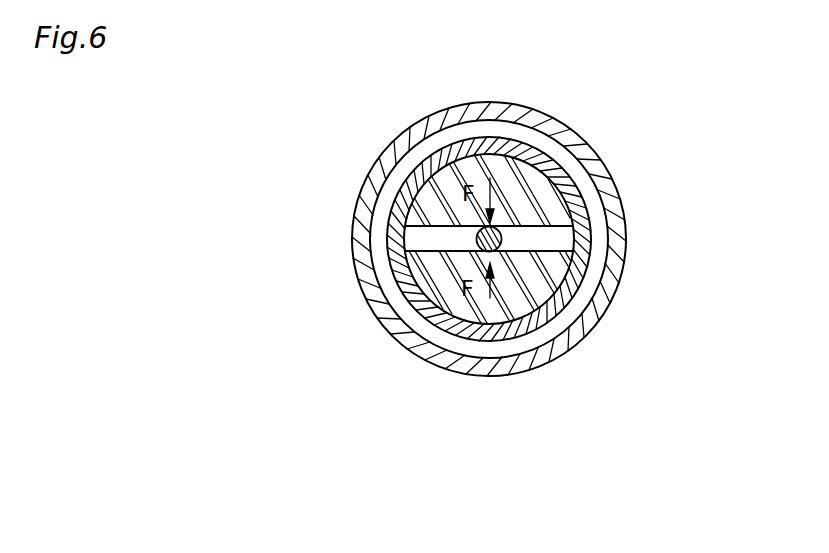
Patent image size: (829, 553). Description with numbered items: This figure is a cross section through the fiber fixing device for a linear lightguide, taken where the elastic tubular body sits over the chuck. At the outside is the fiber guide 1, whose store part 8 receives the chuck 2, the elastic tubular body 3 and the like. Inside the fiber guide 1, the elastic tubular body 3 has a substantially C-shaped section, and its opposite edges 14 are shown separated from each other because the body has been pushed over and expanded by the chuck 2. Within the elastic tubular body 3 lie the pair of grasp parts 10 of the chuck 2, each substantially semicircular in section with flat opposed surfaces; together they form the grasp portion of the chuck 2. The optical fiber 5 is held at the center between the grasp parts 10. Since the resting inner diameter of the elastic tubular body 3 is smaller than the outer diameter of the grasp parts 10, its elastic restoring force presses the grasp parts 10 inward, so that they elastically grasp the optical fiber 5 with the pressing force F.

The fiber guide 1 is at (395, 153).
The chuck 2 is at (291, 190).
The elastic tubular body 3 is at (540, 326).
The optical fiber 5 is at (502, 239).
The store part 8 is at (478, 350).
The grasp parts 10 is at (418, 207).
The opposite edges 14 is at (588, 178).